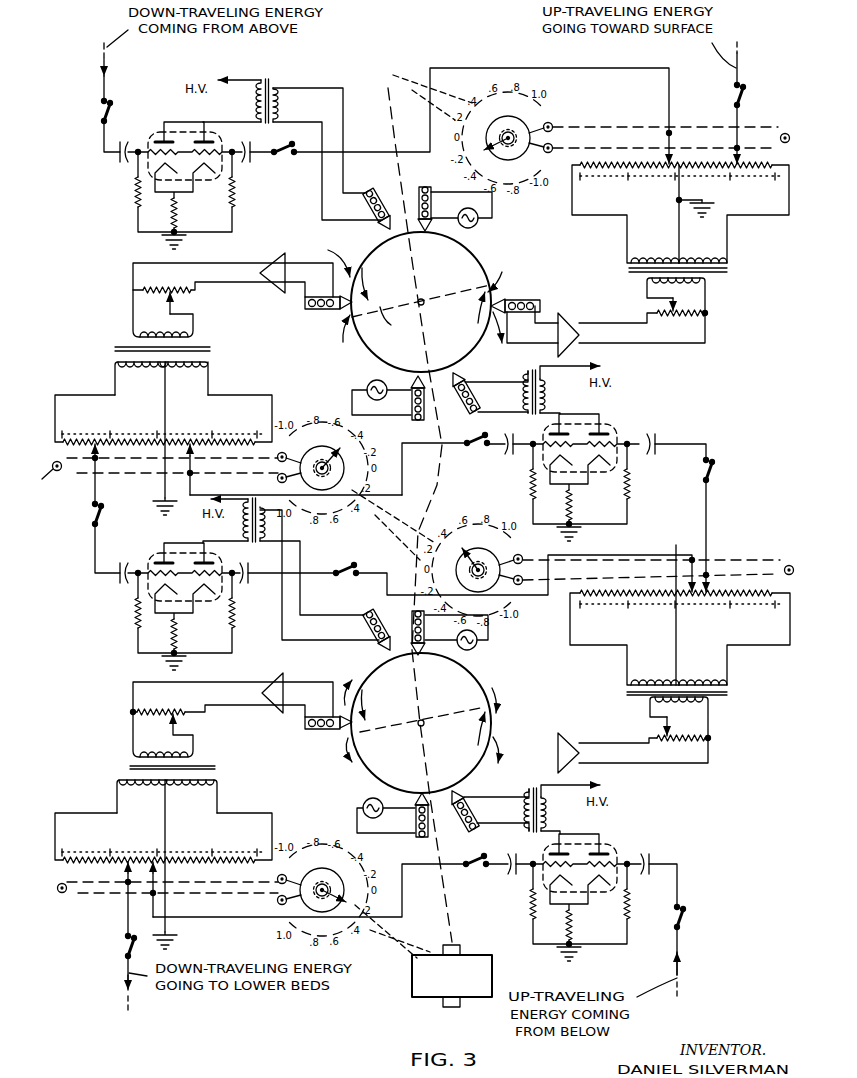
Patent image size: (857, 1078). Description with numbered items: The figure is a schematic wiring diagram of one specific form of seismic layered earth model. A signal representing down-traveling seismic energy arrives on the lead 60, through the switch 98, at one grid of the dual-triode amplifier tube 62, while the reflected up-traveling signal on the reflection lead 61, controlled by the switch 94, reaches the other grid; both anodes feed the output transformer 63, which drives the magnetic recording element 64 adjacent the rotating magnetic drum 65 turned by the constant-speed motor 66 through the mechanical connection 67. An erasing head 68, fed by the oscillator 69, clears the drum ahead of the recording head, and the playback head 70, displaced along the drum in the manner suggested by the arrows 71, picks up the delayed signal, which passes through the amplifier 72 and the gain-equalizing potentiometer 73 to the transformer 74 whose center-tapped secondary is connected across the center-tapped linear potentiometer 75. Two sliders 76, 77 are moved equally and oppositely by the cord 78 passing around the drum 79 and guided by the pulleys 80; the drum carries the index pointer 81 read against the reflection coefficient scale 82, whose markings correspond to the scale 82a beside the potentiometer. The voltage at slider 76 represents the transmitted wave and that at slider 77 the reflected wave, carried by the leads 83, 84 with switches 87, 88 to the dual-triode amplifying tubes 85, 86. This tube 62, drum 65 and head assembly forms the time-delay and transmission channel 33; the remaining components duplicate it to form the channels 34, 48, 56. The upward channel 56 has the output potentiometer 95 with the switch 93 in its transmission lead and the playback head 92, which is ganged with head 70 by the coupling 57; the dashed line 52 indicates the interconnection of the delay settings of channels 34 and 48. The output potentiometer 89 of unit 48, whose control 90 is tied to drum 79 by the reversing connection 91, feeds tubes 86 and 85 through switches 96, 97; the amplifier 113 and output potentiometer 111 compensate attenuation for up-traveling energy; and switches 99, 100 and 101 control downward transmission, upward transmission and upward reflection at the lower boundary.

The time-delay and transmission channel 33 is at (203, 374).
The time-delay and transmission channel 34 is at (135, 650).
The time-delay and transmission channel 48 is at (691, 777).
The dashed line 52 is at (367, 732).
The upward transmission channel 56 is at (692, 357).
The coupling 57 is at (395, 322).
The lead 60 is at (102, 140).
The lead 61 is at (266, 153).
The dual-triode amplifier tube 62 is at (167, 135).
The output transformer 63 is at (252, 105).
The magnetic recording element 64 is at (378, 231).
The rotating magnetic drum 65 is at (452, 271).
The constant-speed motor 66 is at (411, 996).
The mechanical connection 67 is at (394, 142).
The erasing head 68 is at (459, 230).
The oscillator 69 is at (486, 220).
The playback head 70 is at (343, 304).
The arrows 71 is at (517, 264).
The amplifier 72 is at (268, 288).
The gain-equalizing potentiometer 73 is at (158, 289).
The transformer 74 is at (198, 345).
The center-tapped linear potentiometer 75 is at (143, 440).
The slider 76 is at (90, 451).
The slider 77 is at (195, 451).
The cord 78 is at (193, 475).
The drum 79 is at (319, 498).
The pulleys 80 is at (277, 457).
The index pointer 81 is at (366, 447).
The reflection coefficient scale 82 is at (368, 457).
The scale 82a is at (173, 431).
The lead 83 is at (90, 547).
The lead 84 is at (403, 467).
The dual-triode amplifying tube 85 is at (156, 554).
The dual-triode amplifying tube 86 is at (616, 426).
The switch 87 is at (85, 511).
The switch 88 is at (470, 437).
The output potentiometer 89 is at (600, 593).
The control 90 is at (499, 553).
The reversing connection 91 is at (412, 516).
The playback head 92 is at (512, 299).
The switch 93 is at (754, 94).
The switch 94 is at (278, 143).
The output potentiometer 95 is at (660, 165).
The switch 96 is at (724, 471).
The switch 97 is at (344, 577).
The switch 98 is at (112, 111).
The switch 99 is at (110, 943).
The switch 100 is at (699, 923).
The switch 101 is at (477, 851).
The output potentiometer 111 is at (675, 734).
The amplifier 113 is at (569, 736).